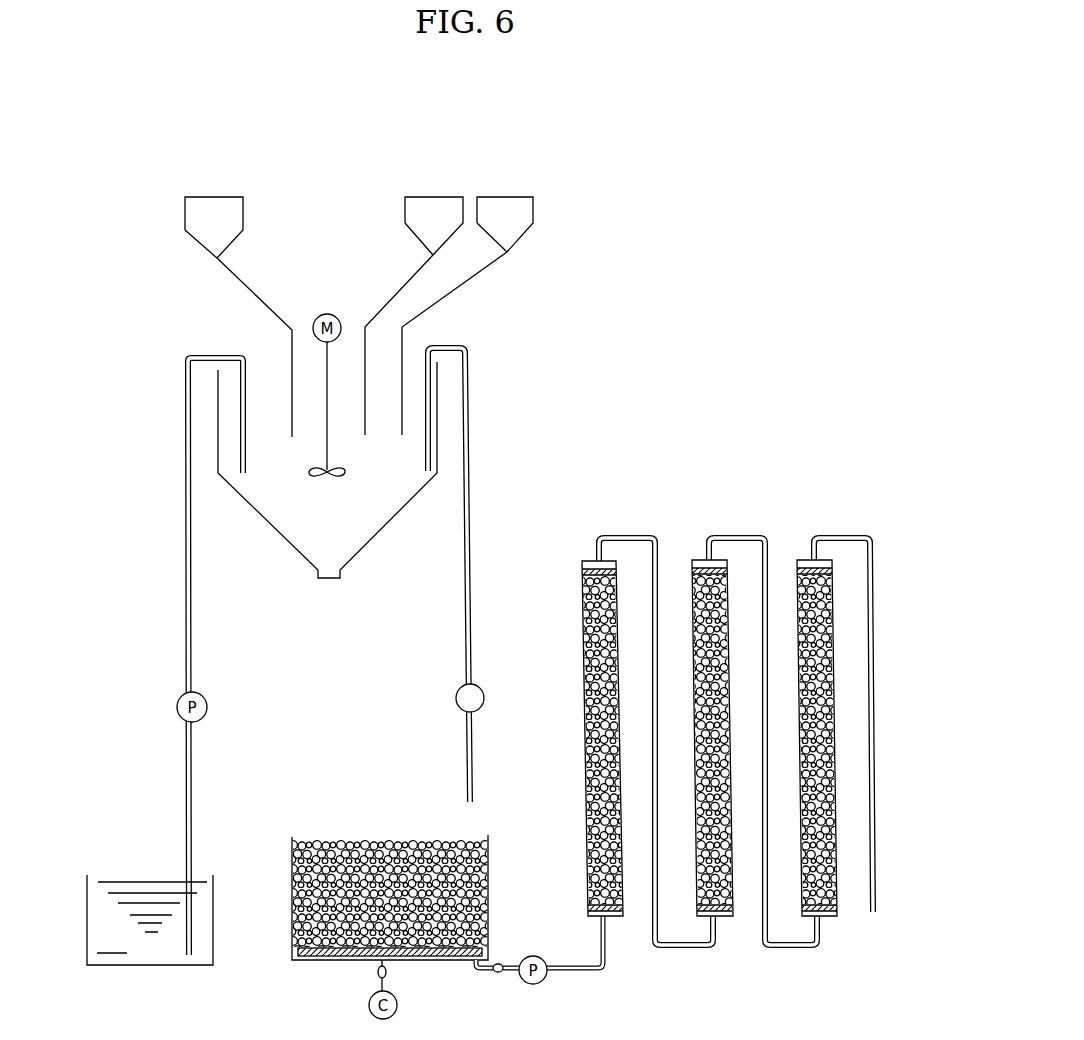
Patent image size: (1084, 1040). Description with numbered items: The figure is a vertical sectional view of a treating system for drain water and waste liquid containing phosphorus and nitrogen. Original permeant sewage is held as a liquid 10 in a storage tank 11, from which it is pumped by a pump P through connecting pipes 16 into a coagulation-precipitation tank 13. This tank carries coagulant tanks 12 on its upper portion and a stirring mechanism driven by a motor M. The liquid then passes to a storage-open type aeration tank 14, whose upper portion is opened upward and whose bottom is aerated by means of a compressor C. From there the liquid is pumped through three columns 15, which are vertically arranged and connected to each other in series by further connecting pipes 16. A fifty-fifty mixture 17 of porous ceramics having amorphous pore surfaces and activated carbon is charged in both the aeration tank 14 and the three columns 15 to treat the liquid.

The liquid 10 is at (151, 918).
The storage tank 11 is at (213, 909).
The coagulant tanks 12 is at (243, 212).
The coagulation-precipitation tank 13 is at (377, 530).
The storage-open type aeration tank 14 is at (488, 893).
The columns 15 is at (583, 792).
The connecting pipes 16 is at (471, 523).
The mixture 17 is at (600, 638).